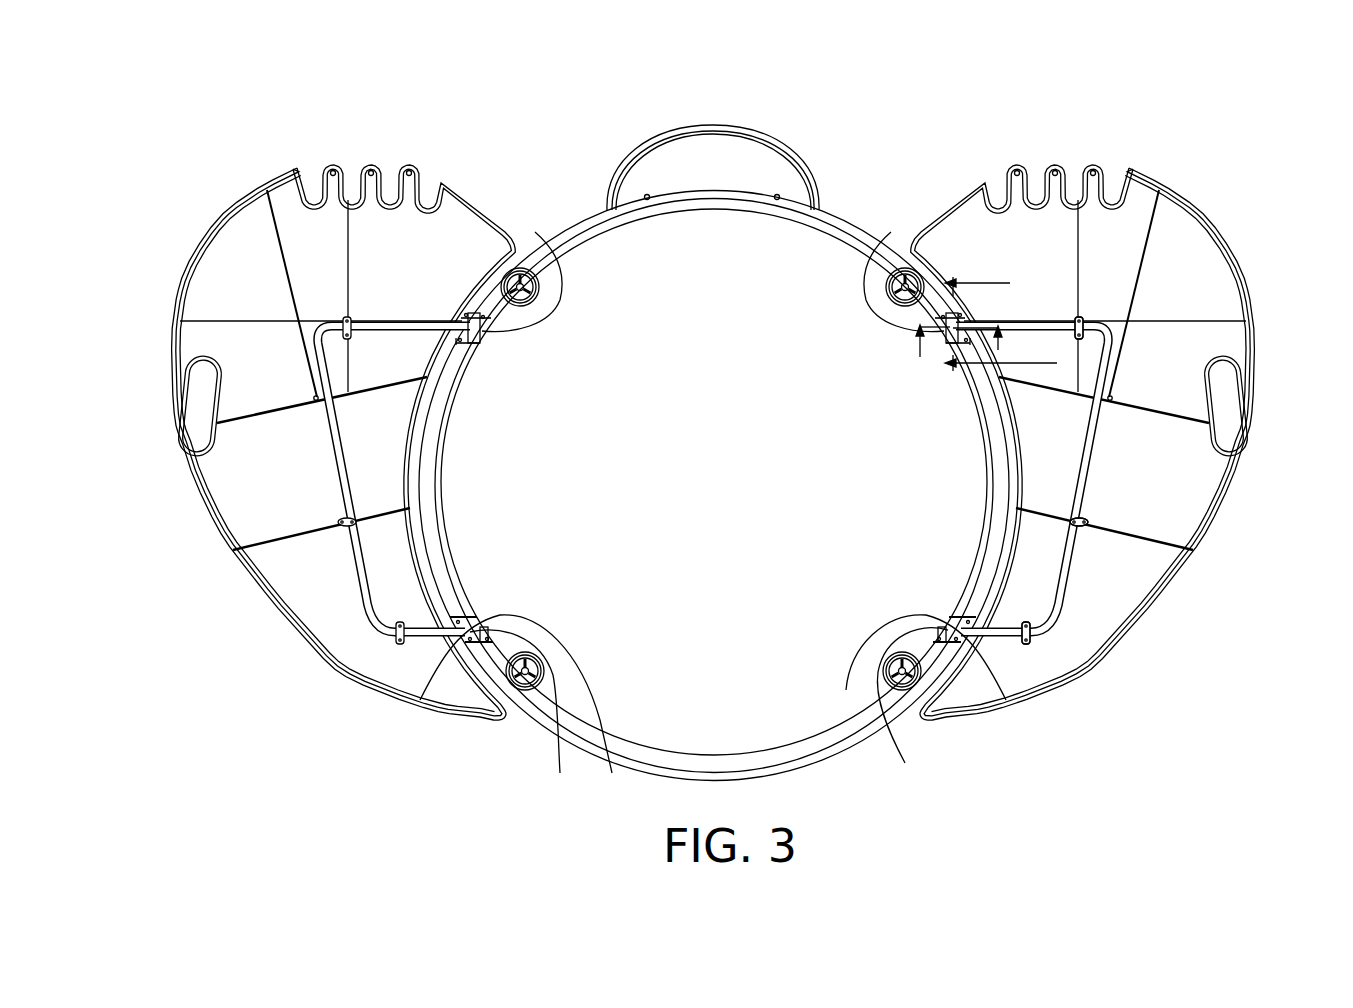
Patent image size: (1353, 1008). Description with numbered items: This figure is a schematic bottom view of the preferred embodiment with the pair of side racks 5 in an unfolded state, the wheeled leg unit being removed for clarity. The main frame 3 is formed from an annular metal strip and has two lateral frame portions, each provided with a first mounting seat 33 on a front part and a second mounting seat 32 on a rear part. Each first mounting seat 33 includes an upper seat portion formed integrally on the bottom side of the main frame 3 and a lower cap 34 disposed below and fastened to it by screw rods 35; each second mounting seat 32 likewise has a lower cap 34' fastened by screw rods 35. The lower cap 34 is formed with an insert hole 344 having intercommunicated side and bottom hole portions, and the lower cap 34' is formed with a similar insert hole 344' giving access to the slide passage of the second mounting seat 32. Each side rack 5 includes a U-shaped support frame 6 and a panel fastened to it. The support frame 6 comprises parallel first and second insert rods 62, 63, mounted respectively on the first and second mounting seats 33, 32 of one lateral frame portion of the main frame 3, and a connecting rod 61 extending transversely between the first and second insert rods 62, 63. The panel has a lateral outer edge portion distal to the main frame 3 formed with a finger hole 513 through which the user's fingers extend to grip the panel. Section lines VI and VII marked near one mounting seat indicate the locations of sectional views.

The main frame 3 is at (840, 218).
The side rack 5 is at (225, 265).
The finger hole 513 is at (1228, 410).
The support frame 6 is at (340, 605).
The connecting rod 61 is at (1098, 440).
The first insert rod 62 is at (1022, 330).
The second insert rod 63 is at (1005, 633).
The insert hole 344 is at (540, 353).
The lower cap 34 is at (711, 245).
The first mounting seat 33 is at (562, 268).
The second mounting seat 32 is at (709, 541).
The lower cap 34' is at (688, 696).
The screw rod 35 is at (460, 636).
The insert hole 344' is at (730, 715).
The section line VI is at (961, 325).
The section line VII is at (1006, 368).